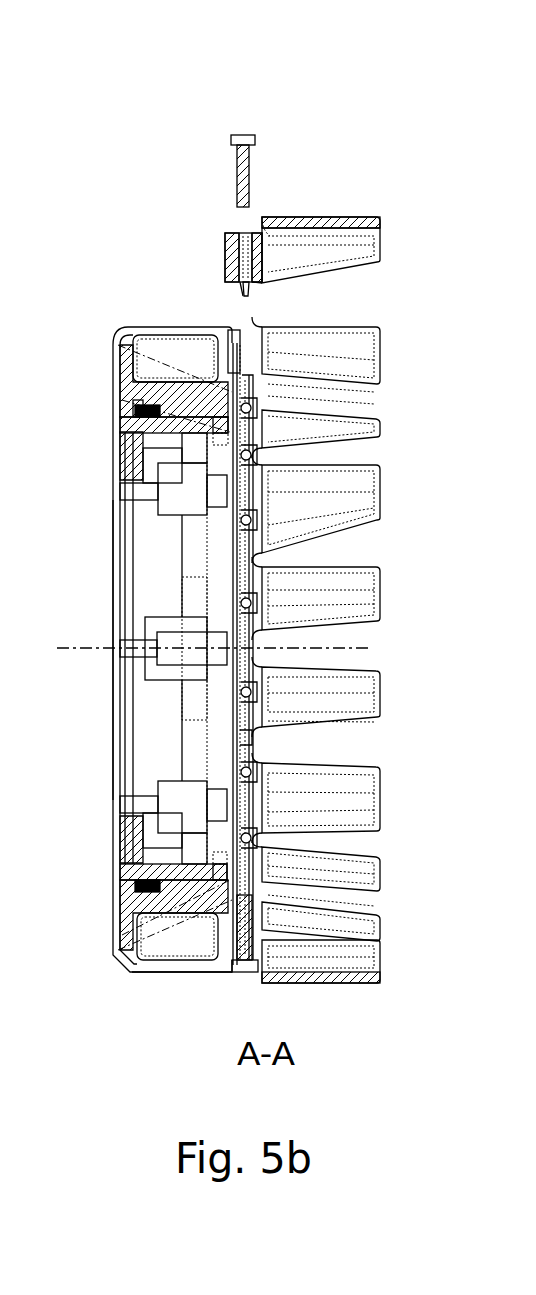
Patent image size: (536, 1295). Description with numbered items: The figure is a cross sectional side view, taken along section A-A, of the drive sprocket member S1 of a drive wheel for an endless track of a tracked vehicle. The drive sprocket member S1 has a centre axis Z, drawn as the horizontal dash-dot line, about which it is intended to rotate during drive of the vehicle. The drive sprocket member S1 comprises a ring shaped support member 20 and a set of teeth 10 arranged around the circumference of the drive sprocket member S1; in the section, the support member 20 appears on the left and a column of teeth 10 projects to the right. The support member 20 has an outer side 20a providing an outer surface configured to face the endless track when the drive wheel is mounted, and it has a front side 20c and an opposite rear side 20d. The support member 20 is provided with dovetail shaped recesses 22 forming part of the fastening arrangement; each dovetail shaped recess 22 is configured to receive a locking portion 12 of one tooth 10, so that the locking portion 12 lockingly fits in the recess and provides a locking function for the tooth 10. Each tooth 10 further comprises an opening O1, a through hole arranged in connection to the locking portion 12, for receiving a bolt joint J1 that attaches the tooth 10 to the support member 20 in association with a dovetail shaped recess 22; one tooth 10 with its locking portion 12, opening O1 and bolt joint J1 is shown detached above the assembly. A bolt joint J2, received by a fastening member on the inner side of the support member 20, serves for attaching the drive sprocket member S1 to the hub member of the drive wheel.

The drive sprocket member S1 is at (273, 73).
The bolt joint J1 is at (233, 167).
The opening O1 is at (243, 250).
The locking portion 12 is at (222, 255).
The tooth 10 is at (330, 215).
The support member 20 is at (172, 323).
The dovetail shaped recess 22 is at (236, 342).
The bolt joint J2 is at (132, 412).
The rear side 20d is at (112, 630).
The centre axis Z is at (83, 650).
The front side 20c is at (247, 735).
The outer side 20a is at (178, 968).